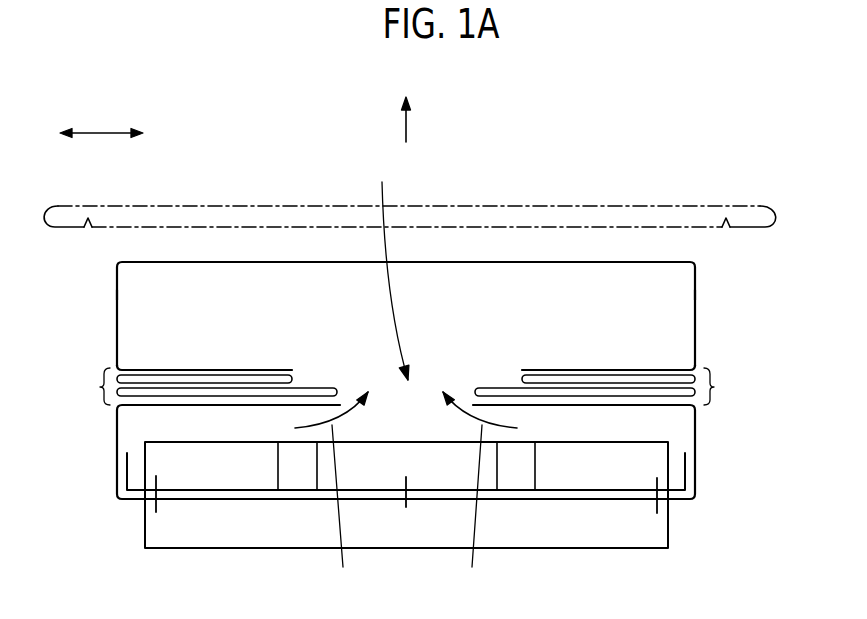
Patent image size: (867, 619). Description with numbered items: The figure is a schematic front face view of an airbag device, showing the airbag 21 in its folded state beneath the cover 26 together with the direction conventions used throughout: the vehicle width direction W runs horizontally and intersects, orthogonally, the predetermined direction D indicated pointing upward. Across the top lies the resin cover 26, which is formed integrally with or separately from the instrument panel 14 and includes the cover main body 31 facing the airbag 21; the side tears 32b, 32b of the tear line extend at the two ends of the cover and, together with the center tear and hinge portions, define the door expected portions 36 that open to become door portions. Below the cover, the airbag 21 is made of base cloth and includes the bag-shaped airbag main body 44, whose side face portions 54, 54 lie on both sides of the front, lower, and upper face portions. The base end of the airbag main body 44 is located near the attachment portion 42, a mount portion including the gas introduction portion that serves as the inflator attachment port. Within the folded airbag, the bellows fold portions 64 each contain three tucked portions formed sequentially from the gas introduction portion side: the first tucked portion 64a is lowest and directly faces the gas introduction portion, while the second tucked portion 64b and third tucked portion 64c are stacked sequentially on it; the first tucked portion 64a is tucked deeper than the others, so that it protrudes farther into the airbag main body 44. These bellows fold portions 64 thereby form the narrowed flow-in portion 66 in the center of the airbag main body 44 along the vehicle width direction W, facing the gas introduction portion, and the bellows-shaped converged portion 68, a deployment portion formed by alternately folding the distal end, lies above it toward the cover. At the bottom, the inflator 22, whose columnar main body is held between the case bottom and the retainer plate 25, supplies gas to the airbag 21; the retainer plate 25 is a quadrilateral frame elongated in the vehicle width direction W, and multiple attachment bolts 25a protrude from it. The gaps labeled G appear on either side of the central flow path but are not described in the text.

The instrument panel 14 is at (750, 205).
The cover 26 is at (168, 205).
The door expected portion 36 is at (115, 205).
The cover main body 31 is at (648, 205).
The side tear 32b is at (90, 230).
The airbag 21 is at (405, 314).
The side face portion 54 is at (117, 294).
The converged portion 68 is at (592, 262).
The narrowed flow-in portion 66 is at (388, 268).
The bellows fold portion 64 is at (407, 364).
The first tucked portion 64a is at (338, 394).
The second tucked portion 64b is at (293, 380).
The third tucked portion 64c is at (292, 368).
The airbag main body 44 is at (695, 432).
The attachment portion 42 is at (684, 500).
The inflator 22 is at (669, 470).
The retainer plate 25 is at (687, 478).
The attachment bolt 25a is at (155, 512).
The gap G is at (407, 511).
The vehicle width direction W is at (101, 118).
The predetermined direction D is at (418, 119).